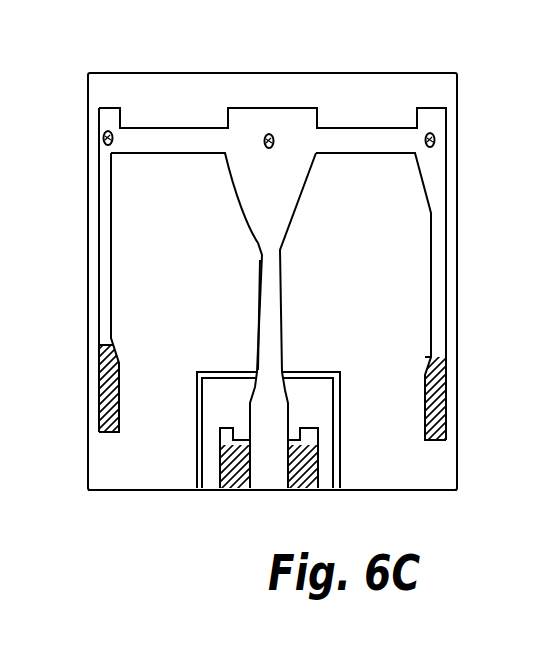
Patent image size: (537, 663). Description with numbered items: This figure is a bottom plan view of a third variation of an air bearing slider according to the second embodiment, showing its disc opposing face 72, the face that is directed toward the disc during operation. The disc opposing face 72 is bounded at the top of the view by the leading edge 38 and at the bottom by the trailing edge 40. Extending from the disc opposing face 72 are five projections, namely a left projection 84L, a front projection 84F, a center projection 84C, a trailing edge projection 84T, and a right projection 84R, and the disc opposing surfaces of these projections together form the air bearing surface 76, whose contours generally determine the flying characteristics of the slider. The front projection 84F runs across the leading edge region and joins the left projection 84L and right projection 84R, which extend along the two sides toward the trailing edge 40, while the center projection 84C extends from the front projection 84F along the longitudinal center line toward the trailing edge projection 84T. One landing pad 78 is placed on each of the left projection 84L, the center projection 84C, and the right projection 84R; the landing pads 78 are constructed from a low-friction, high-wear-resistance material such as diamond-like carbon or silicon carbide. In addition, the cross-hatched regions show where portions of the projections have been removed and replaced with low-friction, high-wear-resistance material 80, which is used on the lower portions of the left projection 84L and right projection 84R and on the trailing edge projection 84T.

The leading edge 38 is at (360, 73).
The trailing edge 40 is at (400, 489).
The disc opposing face 72 is at (112, 464).
The air bearing surface 76 is at (0, 206).
The landing pads 78 is at (472, 121).
The low-friction, high-wear-resistance material 80 is at (105, 396).
The front projection 84F is at (153, 140).
The left projection 84L is at (107, 228).
The right projection 84R is at (433, 173).
The center projection 84C is at (272, 310).
The trailing edge projection 84T is at (266, 472).